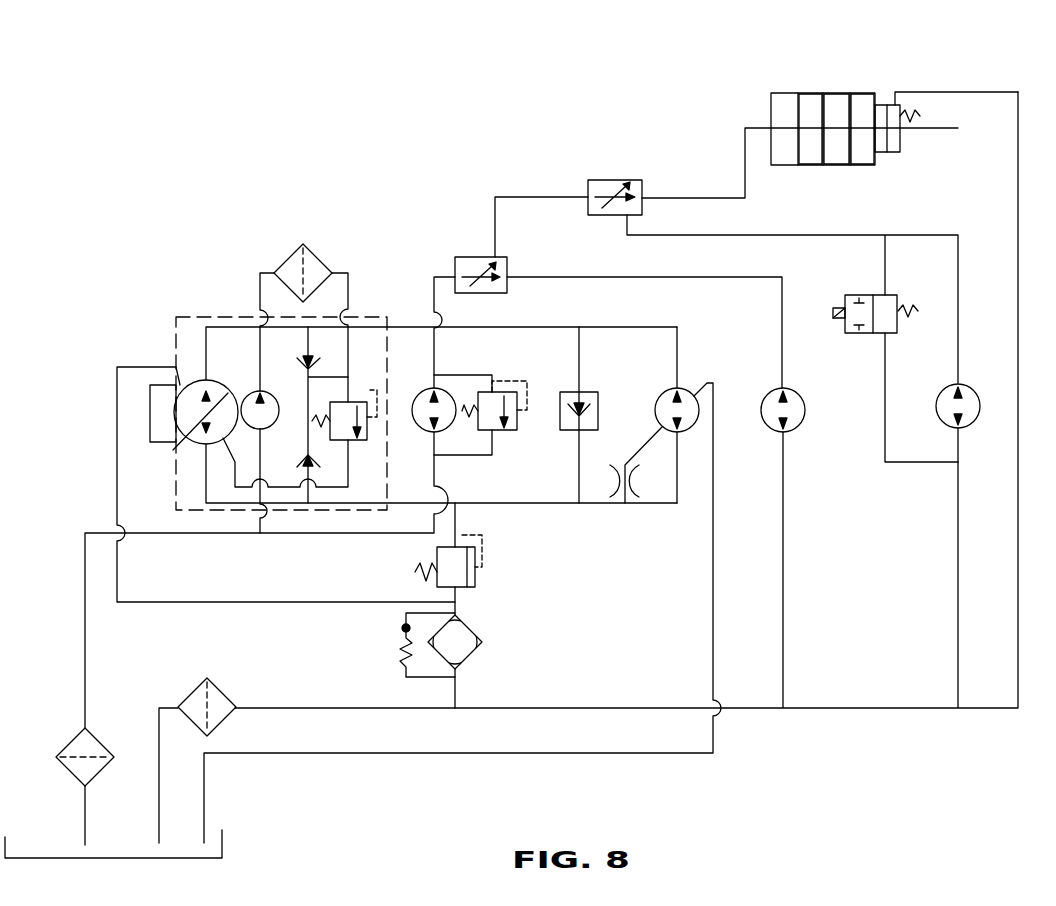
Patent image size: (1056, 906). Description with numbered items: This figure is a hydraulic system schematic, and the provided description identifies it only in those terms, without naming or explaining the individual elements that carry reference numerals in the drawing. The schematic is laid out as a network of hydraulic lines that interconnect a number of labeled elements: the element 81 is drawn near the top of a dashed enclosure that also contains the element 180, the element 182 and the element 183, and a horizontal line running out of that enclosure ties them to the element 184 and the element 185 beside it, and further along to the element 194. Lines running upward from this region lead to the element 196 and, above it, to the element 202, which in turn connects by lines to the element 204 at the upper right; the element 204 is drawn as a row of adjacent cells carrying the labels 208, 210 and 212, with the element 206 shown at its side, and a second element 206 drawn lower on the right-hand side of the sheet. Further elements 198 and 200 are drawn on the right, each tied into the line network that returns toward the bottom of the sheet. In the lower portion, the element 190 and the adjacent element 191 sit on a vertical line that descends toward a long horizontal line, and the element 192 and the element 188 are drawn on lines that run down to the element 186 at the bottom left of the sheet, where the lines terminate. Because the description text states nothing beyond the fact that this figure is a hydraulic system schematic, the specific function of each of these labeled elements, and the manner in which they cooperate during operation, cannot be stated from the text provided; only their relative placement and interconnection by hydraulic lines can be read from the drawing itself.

The filter 81 is at (312, 258).
The charge pump 180 is at (248, 390).
The variable displacement pump 182 is at (177, 442).
The relief valve 183 is at (358, 402).
The hydraulic motor 184 is at (420, 393).
The relief valve 185 is at (503, 393).
The reservoir 186 is at (223, 842).
The filter 188 is at (95, 730).
The oil cooler 190 is at (477, 638).
The bypass relief valve 191 is at (400, 635).
The filter 192 is at (227, 693).
The hydraulic motor 194 is at (663, 393).
The flow control valve 196 is at (507, 268).
The hydraulic motor 198 is at (765, 393).
The hydraulic motor 200 is at (942, 391).
The flow control valve 202 is at (615, 178).
The directional control valve 204 is at (808, 165).
The solenoid 206 is at (782, 92).
The valve position 208 is at (810, 93).
The valve position 210 is at (831, 93).
The valve position 212 is at (864, 93).